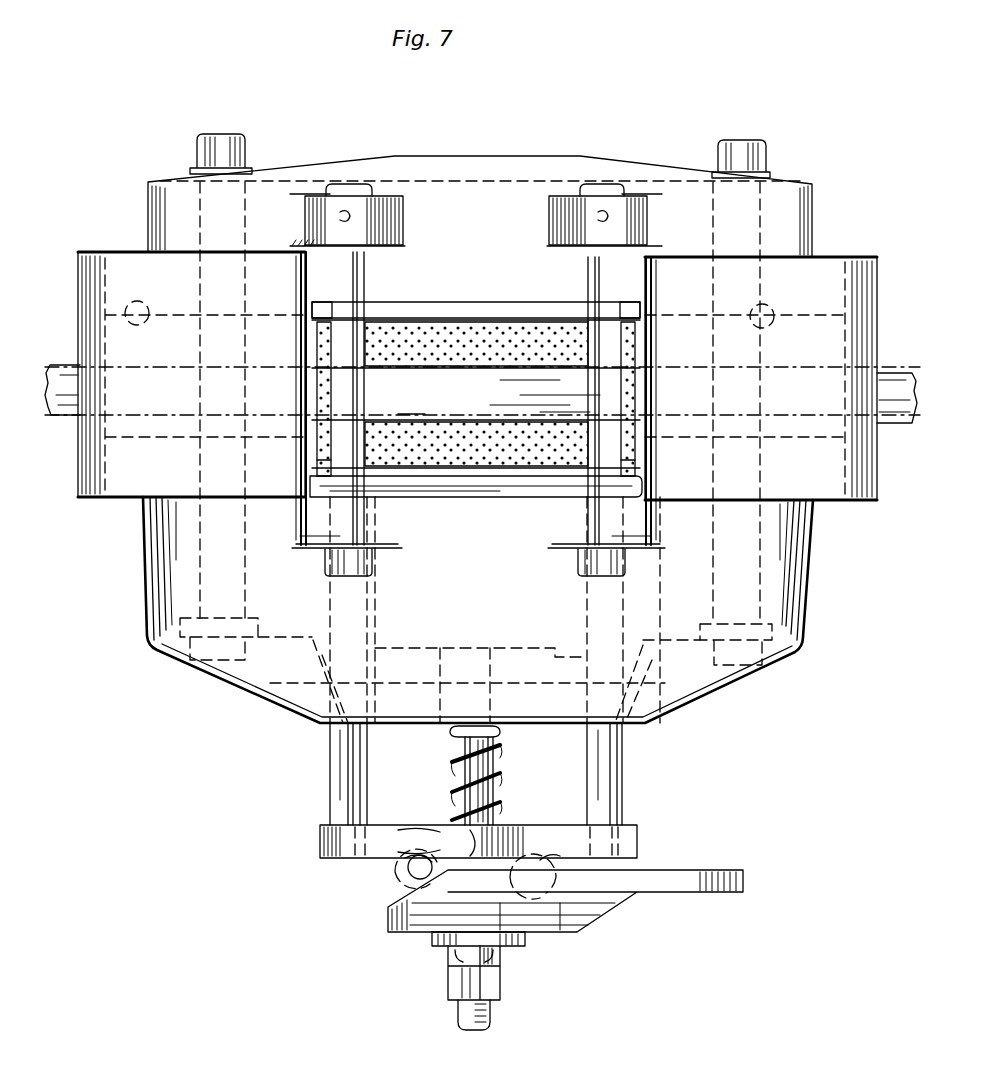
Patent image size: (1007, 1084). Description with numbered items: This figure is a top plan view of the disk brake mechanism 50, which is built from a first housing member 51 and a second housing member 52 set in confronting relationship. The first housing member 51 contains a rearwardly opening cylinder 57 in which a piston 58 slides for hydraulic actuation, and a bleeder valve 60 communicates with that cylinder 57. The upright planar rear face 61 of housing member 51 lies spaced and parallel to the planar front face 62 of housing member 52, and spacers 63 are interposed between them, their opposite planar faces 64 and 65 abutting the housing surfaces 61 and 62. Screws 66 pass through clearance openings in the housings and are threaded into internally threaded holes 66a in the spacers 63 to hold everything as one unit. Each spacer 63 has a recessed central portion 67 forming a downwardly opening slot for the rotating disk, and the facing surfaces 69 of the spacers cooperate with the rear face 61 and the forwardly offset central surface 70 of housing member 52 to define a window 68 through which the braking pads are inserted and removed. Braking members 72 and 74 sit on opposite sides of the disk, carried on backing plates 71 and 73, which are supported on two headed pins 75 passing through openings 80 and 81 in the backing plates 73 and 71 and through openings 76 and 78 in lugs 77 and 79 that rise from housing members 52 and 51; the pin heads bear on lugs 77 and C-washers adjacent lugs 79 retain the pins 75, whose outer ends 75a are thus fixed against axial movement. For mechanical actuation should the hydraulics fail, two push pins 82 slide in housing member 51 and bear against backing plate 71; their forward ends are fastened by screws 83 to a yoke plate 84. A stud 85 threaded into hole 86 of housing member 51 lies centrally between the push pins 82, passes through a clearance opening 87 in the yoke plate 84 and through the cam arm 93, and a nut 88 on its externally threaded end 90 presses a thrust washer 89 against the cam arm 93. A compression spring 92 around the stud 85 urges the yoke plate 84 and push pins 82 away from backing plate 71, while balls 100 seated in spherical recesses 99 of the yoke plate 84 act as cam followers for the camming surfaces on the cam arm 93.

The brake mechanism 50 is at (630, 105).
The first housing member 51 is at (252, 698).
The second housing member 52 is at (441, 144).
The cylinder 57 is at (439, 701).
The piston 58 is at (560, 662).
The bleeder valve 60 is at (482, 394).
The rear face 61 is at (150, 492).
The front face 62 is at (180, 252).
The spacers 63 is at (113, 248).
The planar face 64 is at (850, 500).
The planar face 65 is at (835, 257).
The screws 66 is at (196, 148).
The internally threaded holes 66a is at (790, 464).
The recessed central portion 67 is at (470, 305).
The window 68 is at (645, 352).
The facing surfaces 69 is at (306, 350).
The forwardly offset central surface 70 is at (500, 306).
The backing plate 71 is at (485, 482).
The braking member 72 is at (640, 456).
The backing plate 73 is at (452, 305).
The braking member 74 is at (640, 330).
The headed pins 75 is at (335, 284).
The post lower end 75a is at (626, 556).
The openings 76 is at (340, 212).
The lugs 77 is at (340, 192).
The openings 78 is at (330, 556).
The lugs 79 is at (390, 548).
The openings 80 is at (316, 308).
The openings 81 is at (322, 472).
The push pins 82 is at (336, 780).
The screws 83 is at (325, 840).
The yoke plate 84 is at (428, 828).
The stud 85 is at (504, 770).
The internally threaded hole 86 is at (488, 712).
The clearance opening 87 is at (505, 828).
The nut 88 is at (505, 958).
The thrust washer 89 is at (432, 950).
The externally threaded end 90 is at (492, 1016).
The compression spring 92 is at (455, 762).
The cam arm 93 is at (743, 882).
The spherical recesses 99 is at (404, 870).
The balls 100 is at (395, 885).